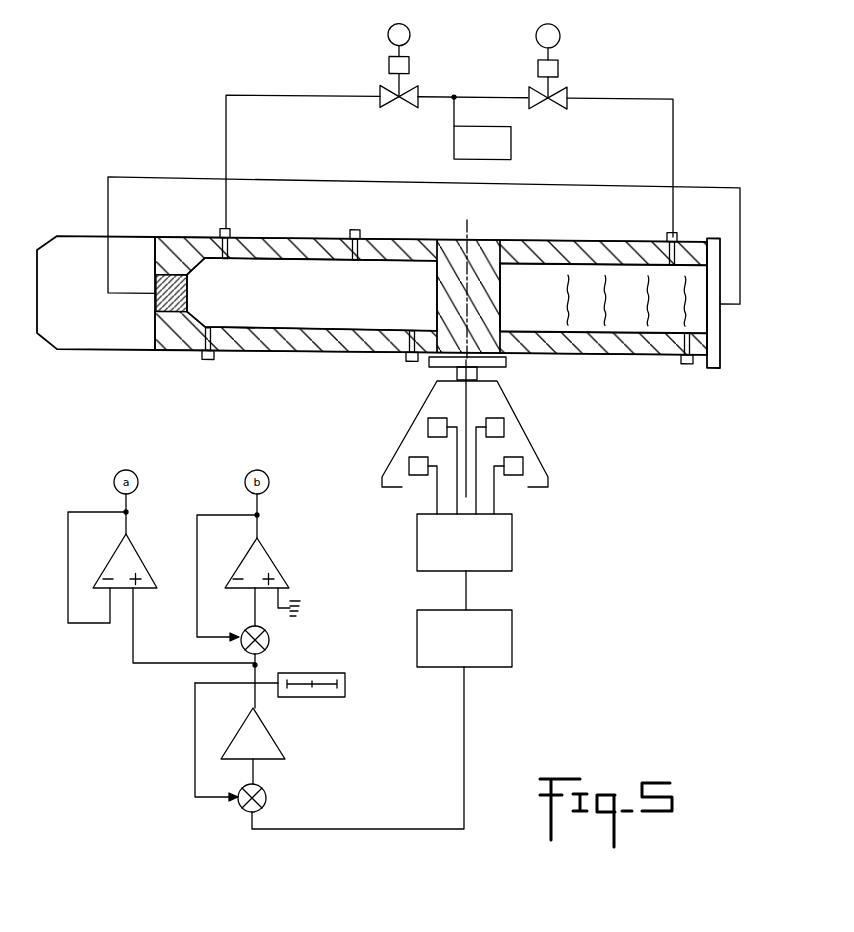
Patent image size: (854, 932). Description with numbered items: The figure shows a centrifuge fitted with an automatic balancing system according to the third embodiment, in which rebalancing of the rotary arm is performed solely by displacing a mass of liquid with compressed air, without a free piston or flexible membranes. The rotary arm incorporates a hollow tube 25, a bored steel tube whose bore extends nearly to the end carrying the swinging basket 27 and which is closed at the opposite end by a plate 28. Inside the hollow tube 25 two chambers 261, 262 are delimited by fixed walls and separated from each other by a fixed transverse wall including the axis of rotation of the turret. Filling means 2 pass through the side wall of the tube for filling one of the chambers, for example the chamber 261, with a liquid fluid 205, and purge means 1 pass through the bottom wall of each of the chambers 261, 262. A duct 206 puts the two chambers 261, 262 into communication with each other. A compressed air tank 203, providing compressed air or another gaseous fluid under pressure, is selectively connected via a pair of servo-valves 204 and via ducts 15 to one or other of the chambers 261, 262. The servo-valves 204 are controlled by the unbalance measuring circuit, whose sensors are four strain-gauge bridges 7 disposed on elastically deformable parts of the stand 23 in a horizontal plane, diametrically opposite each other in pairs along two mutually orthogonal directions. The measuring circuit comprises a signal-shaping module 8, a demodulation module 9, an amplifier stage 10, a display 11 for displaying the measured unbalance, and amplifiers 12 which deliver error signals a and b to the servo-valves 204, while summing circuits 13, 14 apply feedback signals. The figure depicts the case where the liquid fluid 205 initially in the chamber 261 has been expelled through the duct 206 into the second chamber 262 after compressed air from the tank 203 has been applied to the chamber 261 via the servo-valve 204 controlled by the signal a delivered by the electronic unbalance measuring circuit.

The purge means 1 is at (213, 361).
The filling means 2 is at (355, 226).
The strain-gauge bridges 7 is at (412, 460).
The signal-shaping module 8 is at (510, 547).
The demodulation module 9 is at (502, 642).
The amplifier stage 10 is at (267, 750).
The display 11 is at (317, 698).
The amplifiers 12 is at (135, 562).
The summing circuit 13 is at (267, 797).
The summing circuit 14 is at (269, 641).
The ducts 15 is at (223, 140).
The stand 23 is at (547, 468).
The hollow tube 25 is at (193, 236).
The swinging basket 27 is at (46, 340).
The plate 28 is at (718, 350).
The compressed air tank 203 is at (500, 147).
The servo-valves 204 is at (400, 68).
The liquid fluid 205 is at (621, 320).
The duct 206 is at (702, 188).
The first chamber 261 is at (438, 302).
The second chamber 262 is at (588, 265).